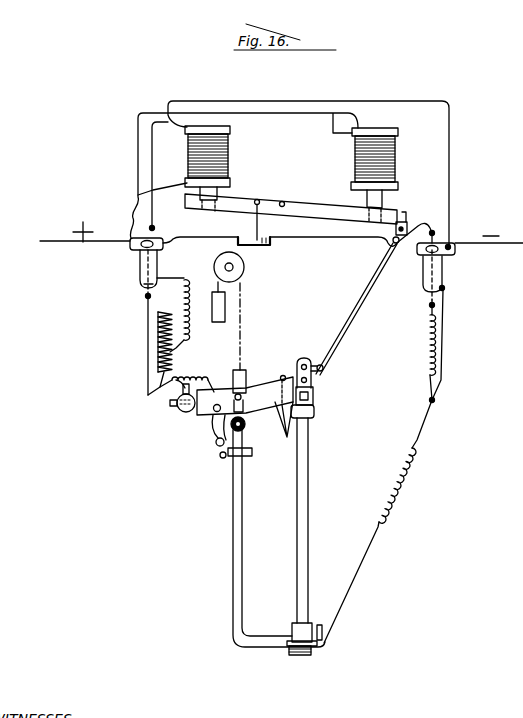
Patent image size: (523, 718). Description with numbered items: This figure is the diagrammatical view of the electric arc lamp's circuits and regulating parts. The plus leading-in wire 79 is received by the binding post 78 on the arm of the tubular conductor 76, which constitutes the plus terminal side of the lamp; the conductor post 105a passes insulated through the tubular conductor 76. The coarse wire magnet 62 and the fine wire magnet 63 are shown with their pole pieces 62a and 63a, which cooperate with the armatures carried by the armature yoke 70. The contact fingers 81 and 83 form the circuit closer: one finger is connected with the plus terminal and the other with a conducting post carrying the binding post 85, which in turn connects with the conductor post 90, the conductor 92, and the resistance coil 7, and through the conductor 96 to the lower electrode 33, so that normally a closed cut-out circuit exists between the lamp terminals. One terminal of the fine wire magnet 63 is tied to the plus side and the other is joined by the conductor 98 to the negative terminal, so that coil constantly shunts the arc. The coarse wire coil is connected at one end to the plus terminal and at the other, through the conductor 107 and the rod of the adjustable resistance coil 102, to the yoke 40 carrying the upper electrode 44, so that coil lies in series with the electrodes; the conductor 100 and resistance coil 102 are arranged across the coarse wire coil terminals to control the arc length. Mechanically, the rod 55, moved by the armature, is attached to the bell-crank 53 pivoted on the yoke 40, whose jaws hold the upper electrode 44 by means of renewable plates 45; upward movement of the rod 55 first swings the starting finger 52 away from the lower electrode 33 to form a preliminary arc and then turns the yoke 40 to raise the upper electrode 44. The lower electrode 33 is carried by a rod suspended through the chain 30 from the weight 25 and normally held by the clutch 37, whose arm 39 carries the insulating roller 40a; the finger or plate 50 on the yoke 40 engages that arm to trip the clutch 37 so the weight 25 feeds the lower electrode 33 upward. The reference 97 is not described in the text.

The conductor 98 is at (308, 167).
The fine wire magnet 63 is at (220, 156).
The pole piece 63a is at (190, 194).
The coarse wire magnet 62 is at (386, 159).
The pole piece 62a is at (384, 200).
The armature yoke 70 is at (299, 201).
The contact finger 81 is at (246, 238).
The contact finger 83 is at (272, 238).
The contact connection 97 is at (268, 246).
The plus leading-in wire 79 is at (85, 232).
The binding post 78 is at (140, 248).
The tubular conductor 76 is at (147, 278).
The conductor post 105a is at (141, 278).
The binding post 85 is at (445, 275).
The conductor post 90 is at (430, 277).
The conductor 92 is at (430, 306).
The resistance coil 7 is at (429, 342).
The conductor 96 is at (357, 575).
The rod 55 is at (357, 306).
The bell-crank 53 is at (310, 365).
The renewable plates 45 is at (315, 393).
The upper electrode 44 is at (315, 411).
The lower electrode 33 is at (309, 489).
The chain 30 is at (243, 306).
The weight 25 is at (218, 322).
The conductor 100 is at (189, 299).
The resistance coil 102 is at (169, 364).
The conductor 107 is at (190, 375).
The yoke 40 is at (252, 391).
The insulating disk or roller 40a is at (247, 423).
The finger or plate 50 is at (236, 395).
The starting finger 52 is at (287, 432).
The arm 39 is at (219, 456).
The clutch 37 is at (253, 455).